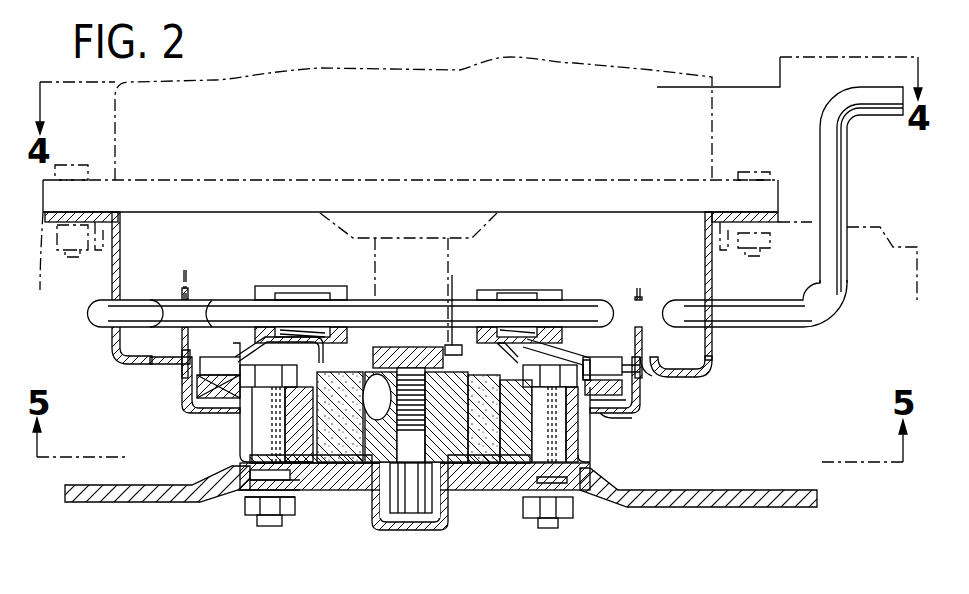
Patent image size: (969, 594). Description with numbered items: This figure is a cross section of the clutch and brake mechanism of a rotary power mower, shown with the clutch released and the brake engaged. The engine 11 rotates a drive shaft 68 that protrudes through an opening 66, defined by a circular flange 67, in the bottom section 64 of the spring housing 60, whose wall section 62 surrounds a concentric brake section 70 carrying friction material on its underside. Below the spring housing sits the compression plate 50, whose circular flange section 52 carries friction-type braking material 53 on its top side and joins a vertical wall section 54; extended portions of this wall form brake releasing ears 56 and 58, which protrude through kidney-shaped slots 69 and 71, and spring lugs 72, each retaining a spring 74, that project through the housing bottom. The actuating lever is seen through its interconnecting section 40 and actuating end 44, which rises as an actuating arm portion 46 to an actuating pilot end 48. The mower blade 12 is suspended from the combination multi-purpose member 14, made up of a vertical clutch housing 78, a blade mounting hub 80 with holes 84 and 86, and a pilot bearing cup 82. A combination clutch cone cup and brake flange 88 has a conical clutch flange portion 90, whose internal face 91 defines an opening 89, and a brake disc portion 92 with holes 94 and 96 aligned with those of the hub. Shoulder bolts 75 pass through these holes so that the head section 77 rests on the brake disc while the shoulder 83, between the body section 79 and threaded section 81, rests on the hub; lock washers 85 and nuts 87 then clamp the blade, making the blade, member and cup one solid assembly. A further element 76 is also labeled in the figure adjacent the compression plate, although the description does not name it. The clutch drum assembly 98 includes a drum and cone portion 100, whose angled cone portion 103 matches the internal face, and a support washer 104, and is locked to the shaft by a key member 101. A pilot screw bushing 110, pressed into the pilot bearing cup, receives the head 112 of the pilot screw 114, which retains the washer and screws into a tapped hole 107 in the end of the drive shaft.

The engine 11 is at (692, 134).
The mower blade 12 is at (110, 497).
The combination multi-purpose member 14 is at (587, 458).
The interconnecting section 40 is at (465, 315).
The actuating end 44 is at (770, 332).
The actuating arm portion 46 is at (841, 182).
The actuating pilot end 48 is at (882, 115).
The compression plate 50 is at (645, 400).
The circular flange section 52 is at (187, 413).
The friction-type braking material 53 is at (607, 398).
The vertical wall section 54 is at (642, 420).
The brake releasing ear 56 is at (640, 297).
The brake releasing ear 58 is at (185, 292).
The spring housing 60 is at (712, 365).
The wall section 62 is at (712, 274).
The bottom section 64 is at (583, 358).
The opening 66 is at (454, 280).
The circular flange 67 is at (367, 378).
The drive shaft 68 is at (373, 253).
The kidney-shaped slot 69 is at (645, 357).
The concentric brake section 70 is at (588, 380).
The kidney-shaped slot 71 is at (180, 353).
The spring lug 72 is at (520, 293).
The spring 74 is at (300, 292).
The shoulder bolt 75 is at (268, 428).
The flange 76 is at (632, 383).
The head section 77 is at (233, 378).
The vertical clutch housing 78 is at (583, 433).
The body section 79 is at (263, 443).
The blade mounting hub 80 is at (497, 477).
The threaded section 81 is at (253, 520).
The pilot bearing cup 82 is at (440, 527).
The shoulder 83 is at (255, 473).
The hole 84 is at (277, 465).
The lock washer 85 is at (273, 482).
The hole 86 is at (580, 495).
The nut 87 is at (283, 510).
The combination clutch cone cup and brake flange 88 is at (310, 365).
The opening 89 is at (322, 362).
The conical clutch flange portion 90 is at (522, 360).
The internal face 91 is at (500, 363).
The brake disc portion 92 is at (652, 412).
The hole 94 is at (268, 413).
The hole 96 is at (537, 387).
The clutch drum assembly 98 is at (338, 443).
The drum and cone portion 100 is at (486, 450).
The key member 101 is at (355, 362).
The cone portion 103 is at (549, 424).
The support washer 104 is at (484, 418).
The tapped hole 107 is at (418, 390).
The pilot screw bushing 110 is at (432, 520).
The head 112 is at (405, 500).
The pilot screw 114 is at (445, 465).